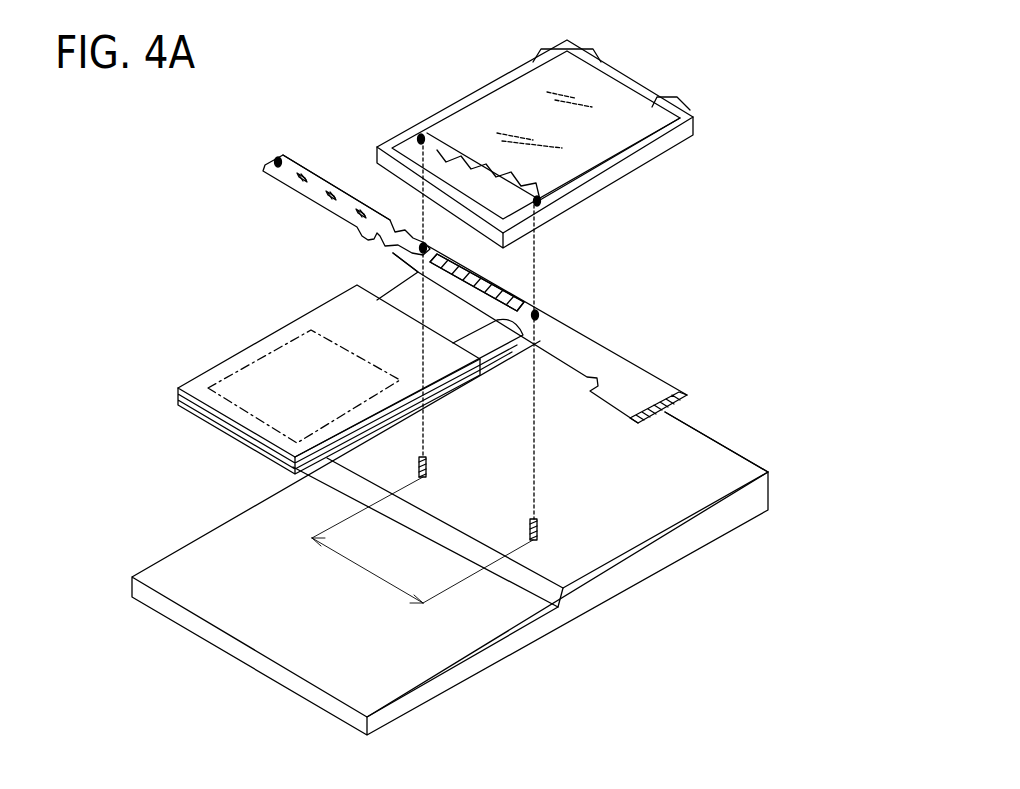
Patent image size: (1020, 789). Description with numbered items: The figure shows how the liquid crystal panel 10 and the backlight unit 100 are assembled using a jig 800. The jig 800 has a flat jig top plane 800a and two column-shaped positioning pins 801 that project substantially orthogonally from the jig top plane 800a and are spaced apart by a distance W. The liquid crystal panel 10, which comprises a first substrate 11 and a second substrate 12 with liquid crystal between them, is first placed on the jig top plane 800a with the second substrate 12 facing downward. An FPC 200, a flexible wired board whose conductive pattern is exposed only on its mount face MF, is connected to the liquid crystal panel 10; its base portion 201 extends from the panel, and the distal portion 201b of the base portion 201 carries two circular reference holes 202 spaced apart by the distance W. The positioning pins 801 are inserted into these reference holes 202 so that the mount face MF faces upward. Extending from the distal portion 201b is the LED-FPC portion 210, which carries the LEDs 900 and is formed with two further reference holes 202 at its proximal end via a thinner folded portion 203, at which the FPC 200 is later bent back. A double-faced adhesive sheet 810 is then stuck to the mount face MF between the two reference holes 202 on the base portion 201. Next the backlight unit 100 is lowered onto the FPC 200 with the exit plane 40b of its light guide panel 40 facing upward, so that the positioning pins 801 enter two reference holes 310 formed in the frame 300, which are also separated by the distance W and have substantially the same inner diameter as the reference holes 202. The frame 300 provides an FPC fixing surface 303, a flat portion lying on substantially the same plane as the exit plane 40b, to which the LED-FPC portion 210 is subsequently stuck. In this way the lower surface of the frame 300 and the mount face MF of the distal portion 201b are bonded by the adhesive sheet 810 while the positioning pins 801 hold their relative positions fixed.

The liquid crystal panel 10 is at (297, 379).
The first substrate 11 is at (177, 388).
The second substrate 12 is at (205, 420).
The light guide panel 40 is at (553, 101).
The exit plane 40b is at (513, 97).
The backlight unit 100 is at (588, 125).
The FPC 200 is at (505, 274).
The base portion 201 is at (472, 323).
The distal portion 201b is at (520, 302).
The reference holes 202 is at (278, 156).
The folded portion 203 is at (387, 253).
The LED-FPC portion 210 is at (331, 193).
The frame 300 is at (652, 156).
The FPC fixing surface 303 is at (420, 134).
The reference holes 310 is at (545, 196).
The jig 800 is at (563, 620).
The jig top plane 800a is at (710, 470).
The positioning pins 801 is at (545, 535).
The double-faced adhesive sheet 810 is at (508, 263).
The LEDs 900 is at (292, 190).
The mount face MF is at (299, 151).
The distance W is at (422, 540).